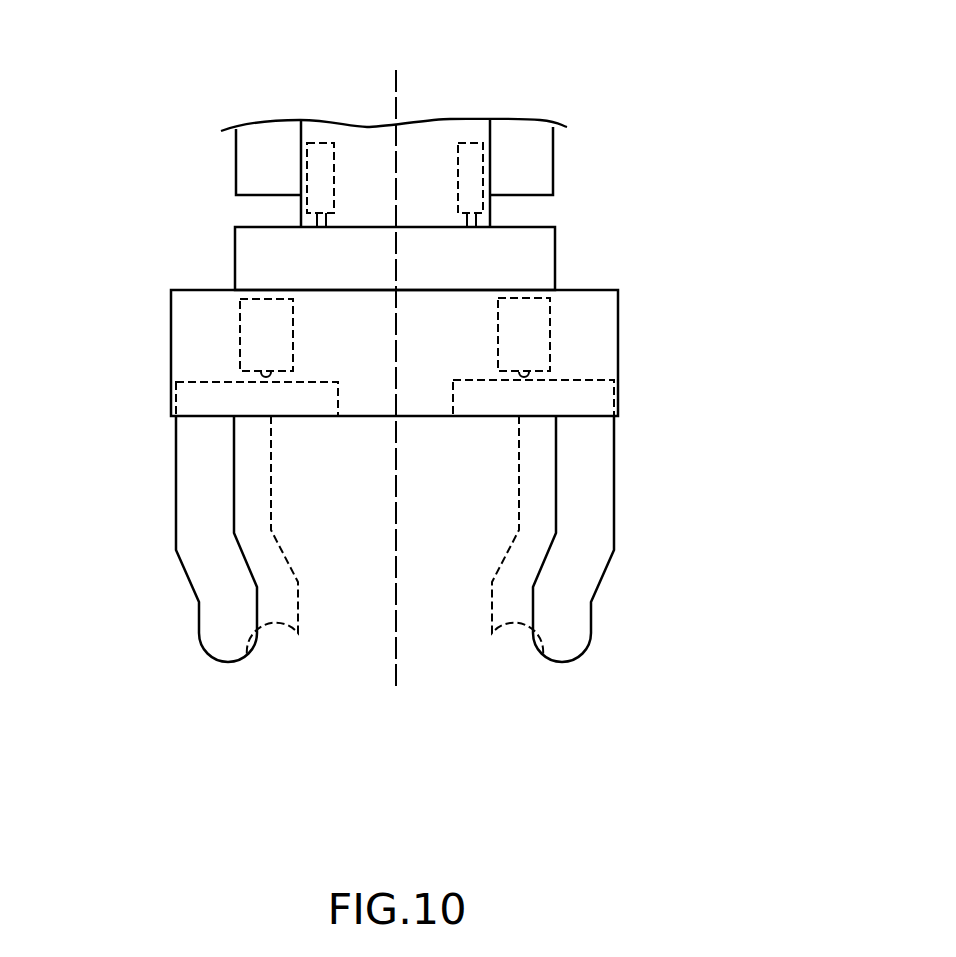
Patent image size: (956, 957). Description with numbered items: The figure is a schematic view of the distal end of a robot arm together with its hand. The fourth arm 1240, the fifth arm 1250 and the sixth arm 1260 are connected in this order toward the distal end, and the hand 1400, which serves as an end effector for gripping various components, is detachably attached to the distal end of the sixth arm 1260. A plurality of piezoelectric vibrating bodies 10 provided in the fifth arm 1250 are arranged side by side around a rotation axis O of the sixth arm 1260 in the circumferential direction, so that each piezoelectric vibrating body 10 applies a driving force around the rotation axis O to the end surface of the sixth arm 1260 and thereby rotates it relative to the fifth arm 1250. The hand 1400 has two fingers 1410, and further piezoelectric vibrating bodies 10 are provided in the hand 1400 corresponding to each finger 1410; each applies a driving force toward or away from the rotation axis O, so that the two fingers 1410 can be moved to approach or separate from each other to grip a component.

The piezoelectric vibrating body 10 is at (320, 140).
The fourth arm 1240 is at (553, 160).
The fifth arm 1250 is at (368, 138).
The sixth arm 1260 is at (554, 240).
The hand 1400 is at (640, 346).
The finger 1410 is at (175, 490).
The rotation axis O is at (397, 90).